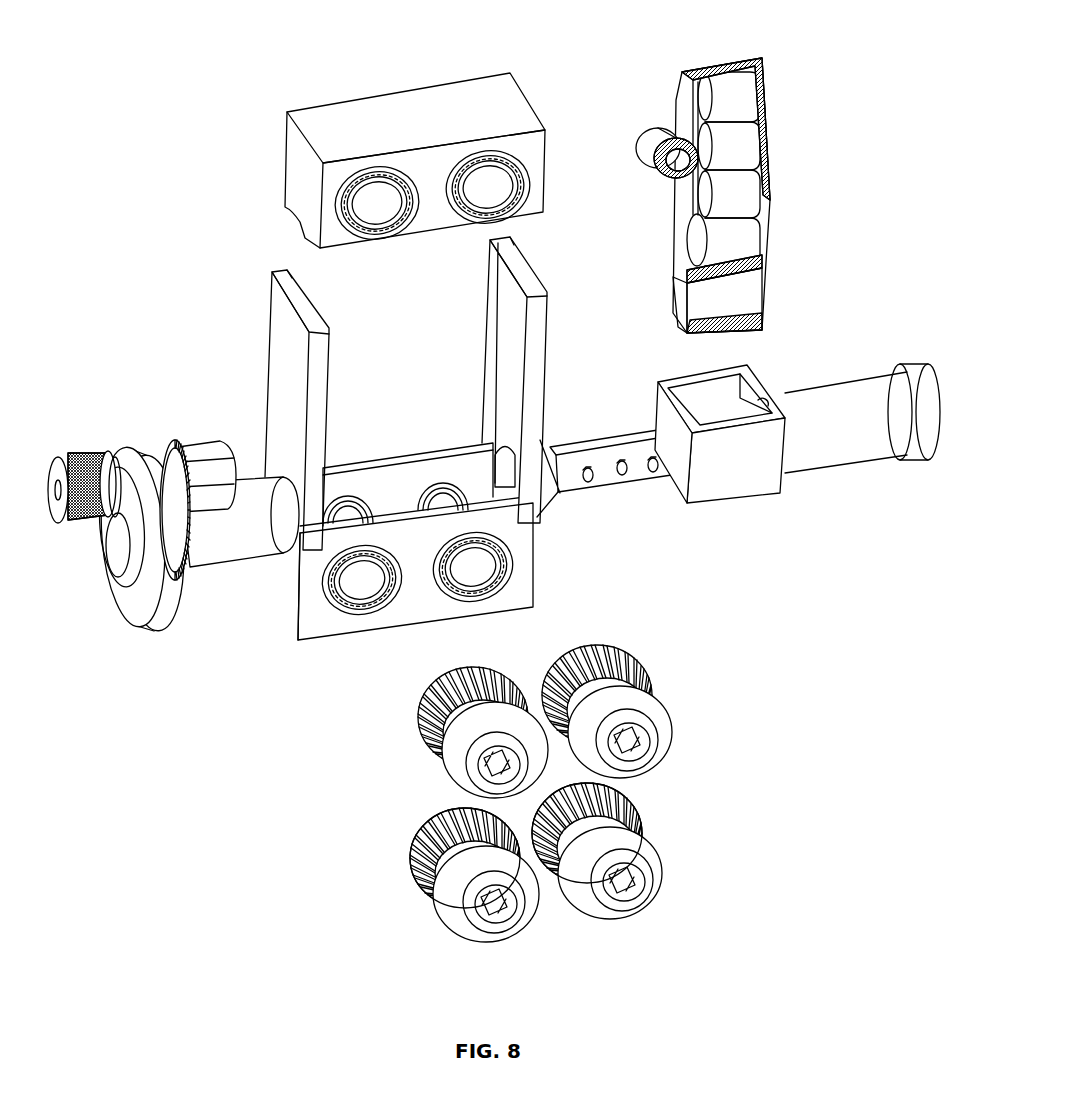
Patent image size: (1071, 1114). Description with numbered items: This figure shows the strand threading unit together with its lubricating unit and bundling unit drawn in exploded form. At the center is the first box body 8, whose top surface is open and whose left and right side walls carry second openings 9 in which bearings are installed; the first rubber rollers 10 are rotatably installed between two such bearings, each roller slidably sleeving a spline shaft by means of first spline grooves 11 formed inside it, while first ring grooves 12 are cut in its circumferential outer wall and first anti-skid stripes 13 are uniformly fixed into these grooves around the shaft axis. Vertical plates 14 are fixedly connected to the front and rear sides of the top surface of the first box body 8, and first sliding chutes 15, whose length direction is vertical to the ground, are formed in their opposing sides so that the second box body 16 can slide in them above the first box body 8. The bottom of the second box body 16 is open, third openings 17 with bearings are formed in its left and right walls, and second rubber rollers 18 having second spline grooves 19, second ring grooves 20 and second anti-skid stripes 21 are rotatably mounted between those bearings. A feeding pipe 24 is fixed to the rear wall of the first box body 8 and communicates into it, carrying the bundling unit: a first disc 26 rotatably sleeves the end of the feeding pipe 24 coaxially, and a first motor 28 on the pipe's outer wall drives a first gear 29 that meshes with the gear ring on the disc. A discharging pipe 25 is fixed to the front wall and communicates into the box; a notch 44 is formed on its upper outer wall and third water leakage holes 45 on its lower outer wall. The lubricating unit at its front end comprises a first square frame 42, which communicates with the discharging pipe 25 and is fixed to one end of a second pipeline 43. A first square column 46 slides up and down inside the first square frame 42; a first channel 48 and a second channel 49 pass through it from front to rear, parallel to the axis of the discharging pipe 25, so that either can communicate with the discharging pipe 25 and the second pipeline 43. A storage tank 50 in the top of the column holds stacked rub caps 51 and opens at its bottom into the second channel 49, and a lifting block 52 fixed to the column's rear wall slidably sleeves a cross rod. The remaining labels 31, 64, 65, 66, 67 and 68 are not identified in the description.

The first box body 8 is at (418, 603).
The second openings 9 is at (360, 587).
The first rubber rollers 10 is at (455, 900).
The first spline grooves 11 is at (485, 923).
The first ring grooves 12 is at (445, 845).
The first anti-skid stripes 13 is at (428, 878).
The vertical plates 14 is at (285, 375).
The first sliding chutes 15 is at (510, 378).
The second box body 16 is at (377, 118).
The third openings 17 is at (487, 190).
The second rubber rollers 18 is at (650, 860).
The second spline grooves 19 is at (633, 893).
The second ring grooves 20 is at (613, 810).
The second anti-skid stripes 21 is at (627, 817).
The feeding pipe 24 is at (253, 530).
The discharging pipe 25 is at (620, 488).
The first disc 26 is at (155, 620).
The first motor 28 is at (202, 448).
The first gear 29 is at (160, 447).
The knob 31 is at (83, 457).
The first square frame 42 is at (727, 470).
The second pipeline 43 is at (842, 452).
The notch 44 is at (582, 437).
The third water leakage holes 45 is at (588, 480).
The first square column 46 is at (688, 102).
The first channel 48 is at (690, 310).
The second channel 49 is at (683, 245).
The storage tank 50 is at (725, 70).
The rub caps 51 is at (738, 247).
The lifting block 52 is at (662, 143).
The arrow 64 is at (297, 643).
The arrow 65 is at (500, 578).
The arrow 66 is at (468, 450).
The arrow 67 is at (450, 833).
The arrow 68 is at (602, 798).